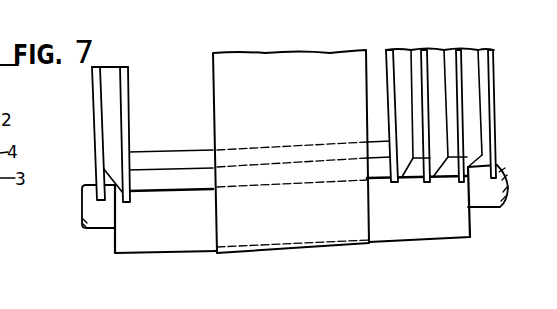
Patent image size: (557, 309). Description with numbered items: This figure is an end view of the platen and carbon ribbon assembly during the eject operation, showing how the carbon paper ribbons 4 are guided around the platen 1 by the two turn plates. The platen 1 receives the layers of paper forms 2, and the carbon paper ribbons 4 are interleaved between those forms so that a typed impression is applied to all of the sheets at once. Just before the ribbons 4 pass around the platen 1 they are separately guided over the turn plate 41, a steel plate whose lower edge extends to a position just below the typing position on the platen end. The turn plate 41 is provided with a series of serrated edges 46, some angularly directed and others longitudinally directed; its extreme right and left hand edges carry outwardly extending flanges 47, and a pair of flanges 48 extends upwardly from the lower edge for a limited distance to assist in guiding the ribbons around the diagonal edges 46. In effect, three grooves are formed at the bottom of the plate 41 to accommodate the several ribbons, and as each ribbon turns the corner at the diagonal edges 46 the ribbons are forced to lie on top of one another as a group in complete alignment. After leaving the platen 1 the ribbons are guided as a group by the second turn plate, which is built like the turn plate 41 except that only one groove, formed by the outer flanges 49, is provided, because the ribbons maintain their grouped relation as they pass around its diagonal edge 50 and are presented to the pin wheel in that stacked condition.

The platen 1 is at (152, 250).
The paper forms 2 is at (222, 55).
The carbon paper ribbons 4 is at (190, 172).
The turn plate 41 is at (387, 50).
The serrated edges 46 is at (404, 184).
The outwardly extending flanges 47 is at (486, 47).
The flanges 48 is at (467, 181).
The outer flanges 49 is at (97, 133).
The diagonal edge 50 is at (118, 193).